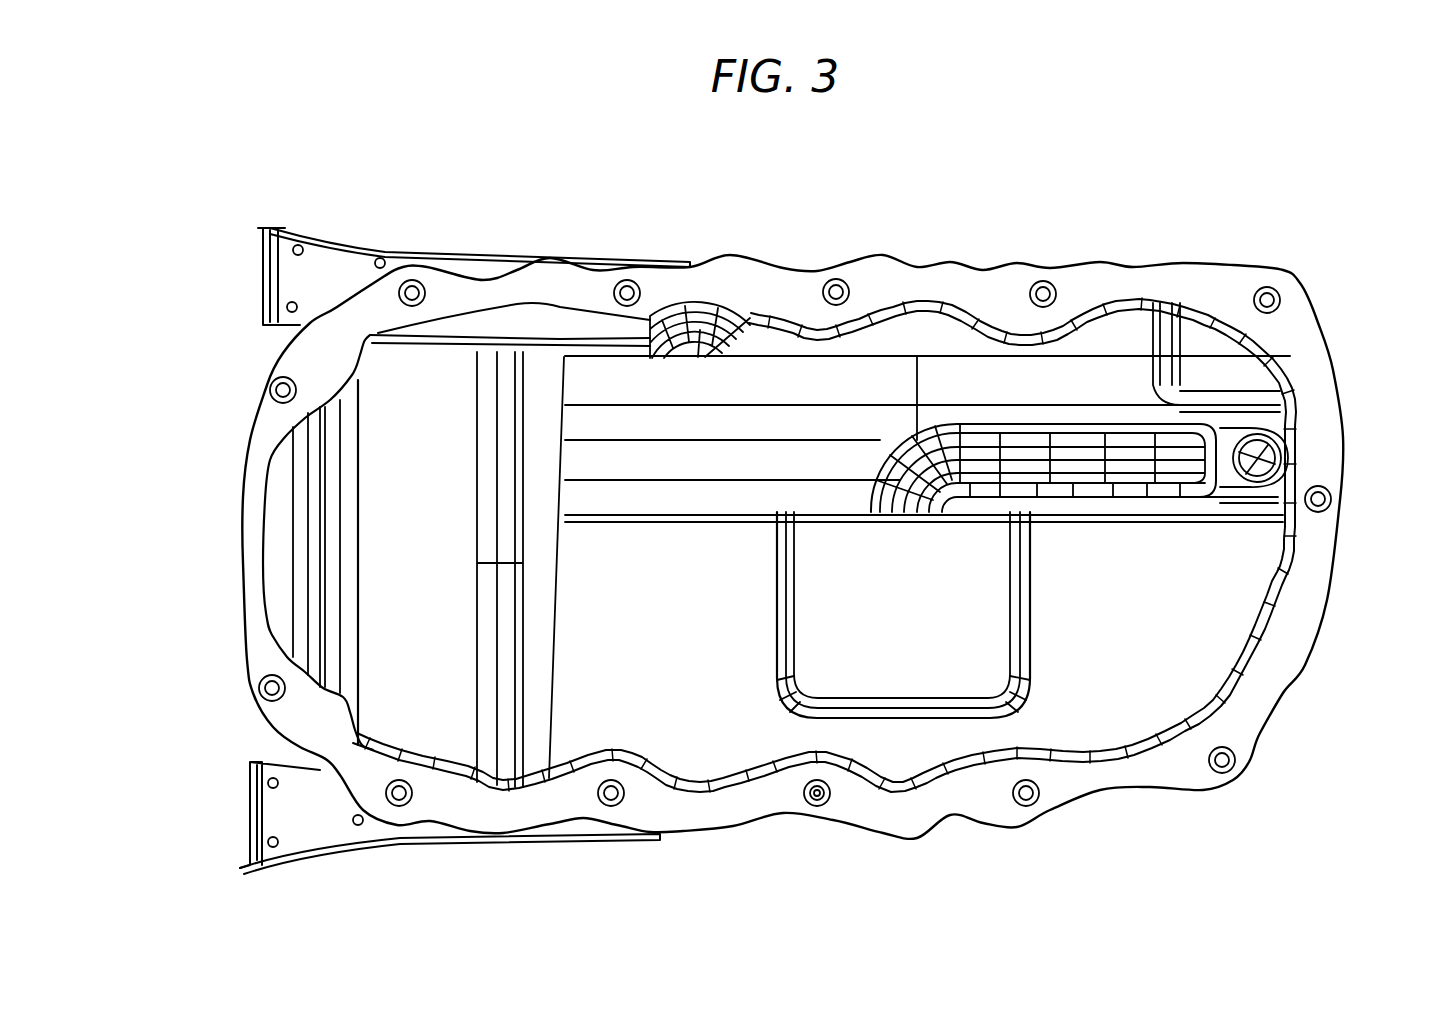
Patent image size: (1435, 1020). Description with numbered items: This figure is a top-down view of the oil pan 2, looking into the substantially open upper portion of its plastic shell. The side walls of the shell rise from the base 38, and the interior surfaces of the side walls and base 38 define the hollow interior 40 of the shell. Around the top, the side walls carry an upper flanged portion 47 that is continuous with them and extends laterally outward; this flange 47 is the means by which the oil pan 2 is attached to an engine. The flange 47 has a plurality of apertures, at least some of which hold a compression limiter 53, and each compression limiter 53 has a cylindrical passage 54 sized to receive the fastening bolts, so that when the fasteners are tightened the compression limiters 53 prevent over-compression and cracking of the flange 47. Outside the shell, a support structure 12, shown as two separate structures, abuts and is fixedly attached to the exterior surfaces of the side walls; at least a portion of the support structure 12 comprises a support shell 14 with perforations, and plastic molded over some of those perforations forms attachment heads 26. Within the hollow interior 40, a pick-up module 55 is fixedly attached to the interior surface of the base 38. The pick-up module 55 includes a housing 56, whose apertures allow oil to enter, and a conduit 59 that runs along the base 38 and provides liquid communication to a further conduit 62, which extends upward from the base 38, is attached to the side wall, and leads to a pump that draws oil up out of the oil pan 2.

The oil pan 2 is at (1288, 848).
The support structure 12 is at (247, 247).
The support shell 14 is at (333, 238).
The attachment heads 26 is at (287, 306).
The base 38 is at (683, 712).
The hollow interior 40 is at (642, 570).
The upper flanged portion 47 is at (1145, 283).
The compression limiter 53 is at (836, 280).
The cylindrical passage 54 is at (817, 800).
The pick-up module 55 is at (1048, 569).
The housing 56 is at (995, 648).
The conduit 59 is at (1090, 440).
The conduit 62 is at (1288, 445).